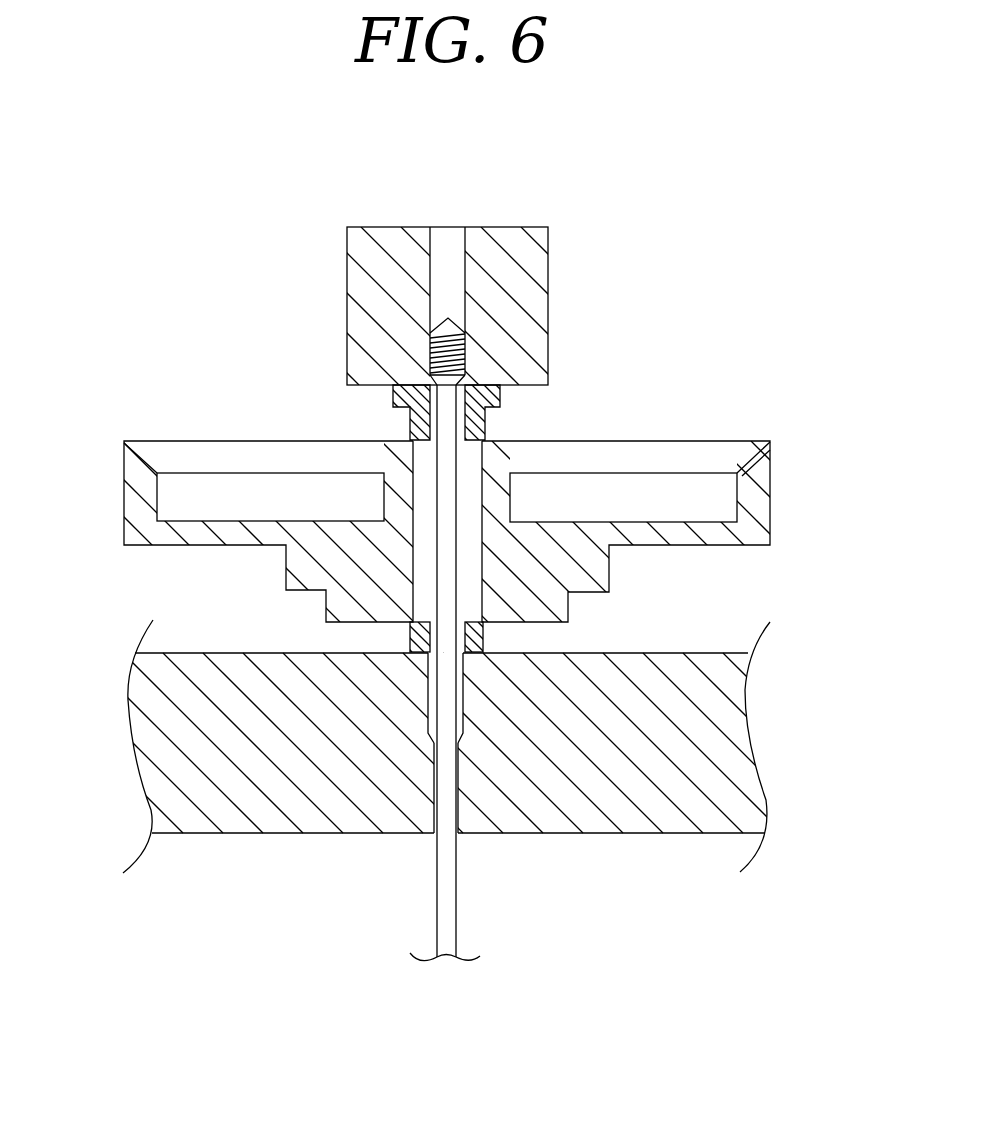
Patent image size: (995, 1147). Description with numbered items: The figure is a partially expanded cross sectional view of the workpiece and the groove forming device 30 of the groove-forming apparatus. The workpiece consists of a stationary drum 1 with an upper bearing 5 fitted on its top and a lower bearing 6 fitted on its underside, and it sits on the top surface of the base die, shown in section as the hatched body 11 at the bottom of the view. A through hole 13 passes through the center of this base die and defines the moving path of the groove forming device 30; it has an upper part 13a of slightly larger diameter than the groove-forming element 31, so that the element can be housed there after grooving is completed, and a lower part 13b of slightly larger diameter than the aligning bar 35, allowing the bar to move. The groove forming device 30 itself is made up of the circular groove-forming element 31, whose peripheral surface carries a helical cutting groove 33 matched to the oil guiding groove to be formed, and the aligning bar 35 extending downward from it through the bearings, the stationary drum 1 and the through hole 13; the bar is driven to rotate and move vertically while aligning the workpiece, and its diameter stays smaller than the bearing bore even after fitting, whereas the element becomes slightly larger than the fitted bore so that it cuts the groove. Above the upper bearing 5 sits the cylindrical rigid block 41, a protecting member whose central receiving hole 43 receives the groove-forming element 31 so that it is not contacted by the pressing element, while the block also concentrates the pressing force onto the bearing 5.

The stationary drum 1 is at (130, 492).
The upper bearing 5 is at (422, 425).
The lower bearing 6 is at (410, 642).
The base 11 is at (728, 731).
The through hole 13 is at (362, 814).
The upper part 13a is at (430, 708).
The lower part 13b is at (430, 783).
The groove forming device 30 is at (585, 614).
The groove-forming element 31 is at (463, 333).
The cutting groove 33 is at (467, 378).
The aligning bar 35 is at (447, 488).
The rigid block 41 is at (373, 293).
The receiving hole 43 is at (462, 271).